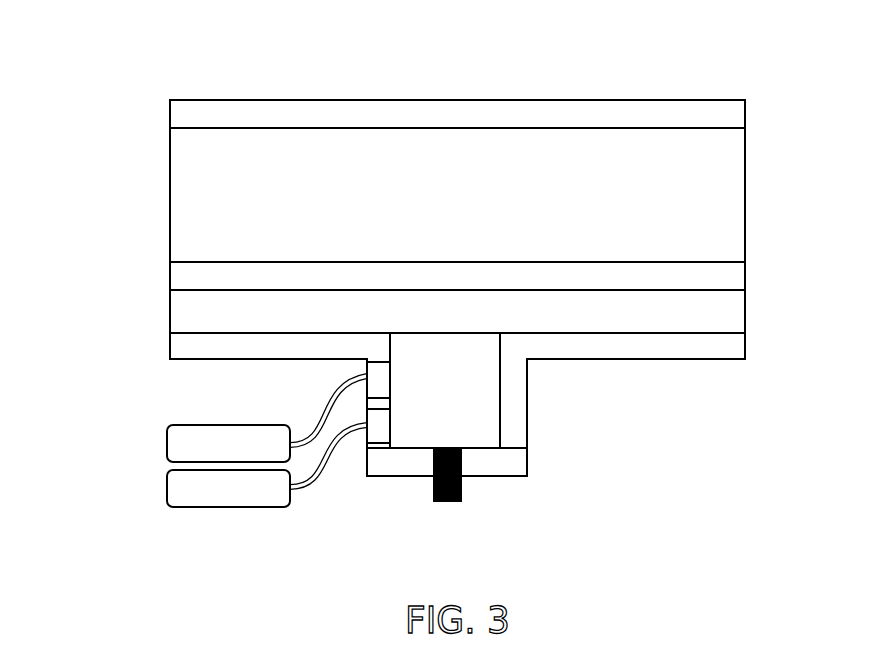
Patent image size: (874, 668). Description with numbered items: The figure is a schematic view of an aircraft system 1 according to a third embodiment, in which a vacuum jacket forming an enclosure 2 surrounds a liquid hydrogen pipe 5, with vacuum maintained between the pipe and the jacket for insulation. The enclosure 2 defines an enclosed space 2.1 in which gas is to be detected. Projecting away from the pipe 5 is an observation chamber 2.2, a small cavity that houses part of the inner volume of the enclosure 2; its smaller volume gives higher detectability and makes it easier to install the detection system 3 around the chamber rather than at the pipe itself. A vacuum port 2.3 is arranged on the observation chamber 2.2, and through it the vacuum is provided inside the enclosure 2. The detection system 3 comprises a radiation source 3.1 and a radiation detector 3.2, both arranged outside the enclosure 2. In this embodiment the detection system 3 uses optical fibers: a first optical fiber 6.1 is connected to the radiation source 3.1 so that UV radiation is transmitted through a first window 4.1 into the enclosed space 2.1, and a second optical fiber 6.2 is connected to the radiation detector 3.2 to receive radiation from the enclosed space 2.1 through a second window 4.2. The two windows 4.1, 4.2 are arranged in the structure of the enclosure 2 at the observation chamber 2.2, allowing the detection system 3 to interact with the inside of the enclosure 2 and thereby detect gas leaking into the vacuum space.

The aircraft system 1 is at (725, 467).
The enclosure 2 is at (692, 347).
The enclosed space 2.1 is at (563, 313).
The observation chamber 2.2 is at (472, 432).
The vacuum port 2.3 is at (445, 503).
The detection system 3 is at (156, 469).
The radiation source 3.1 is at (177, 442).
The radiation detector 3.2 is at (177, 485).
The first window 4.1 is at (378, 383).
The second window 4.2 is at (380, 427).
The liquid hydrogen distribution pipe 5 is at (638, 182).
The first optical fiber 6.1 is at (323, 408).
The second optical fiber 6.2 is at (327, 480).